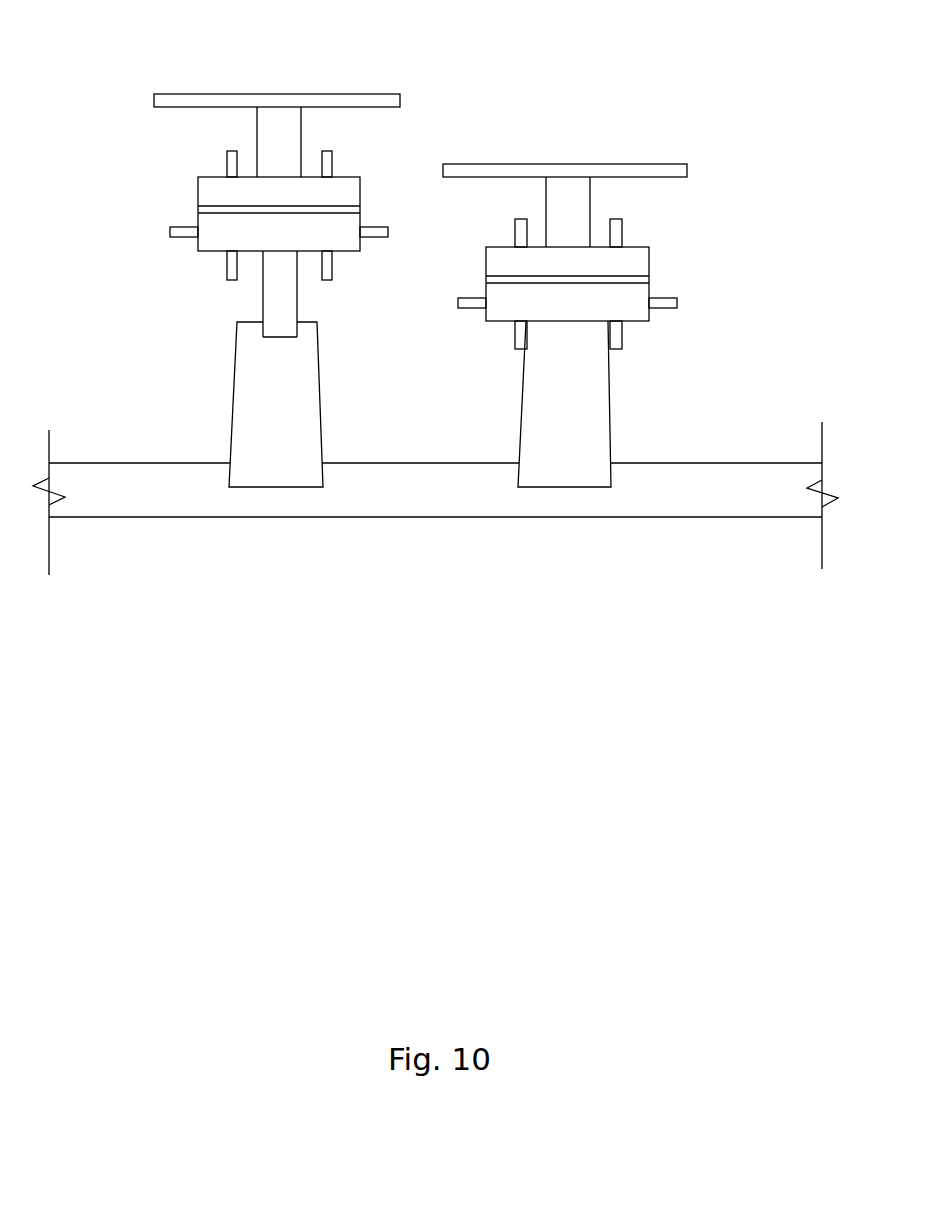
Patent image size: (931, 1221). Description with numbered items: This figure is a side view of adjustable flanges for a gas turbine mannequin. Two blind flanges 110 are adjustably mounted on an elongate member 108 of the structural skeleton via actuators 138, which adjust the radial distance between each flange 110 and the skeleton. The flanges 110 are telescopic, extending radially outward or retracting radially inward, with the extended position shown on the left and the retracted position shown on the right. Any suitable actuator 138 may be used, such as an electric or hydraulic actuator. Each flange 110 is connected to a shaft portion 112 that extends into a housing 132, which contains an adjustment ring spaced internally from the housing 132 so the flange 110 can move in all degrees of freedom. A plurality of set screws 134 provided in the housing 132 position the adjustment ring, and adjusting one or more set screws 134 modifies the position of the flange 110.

The elongate member 108 is at (395, 502).
The blind flange 110 is at (332, 103).
The shaft portion 112 is at (283, 303).
The housing 132 is at (212, 238).
The set screws 134 is at (232, 165).
The actuator 138 is at (252, 425).